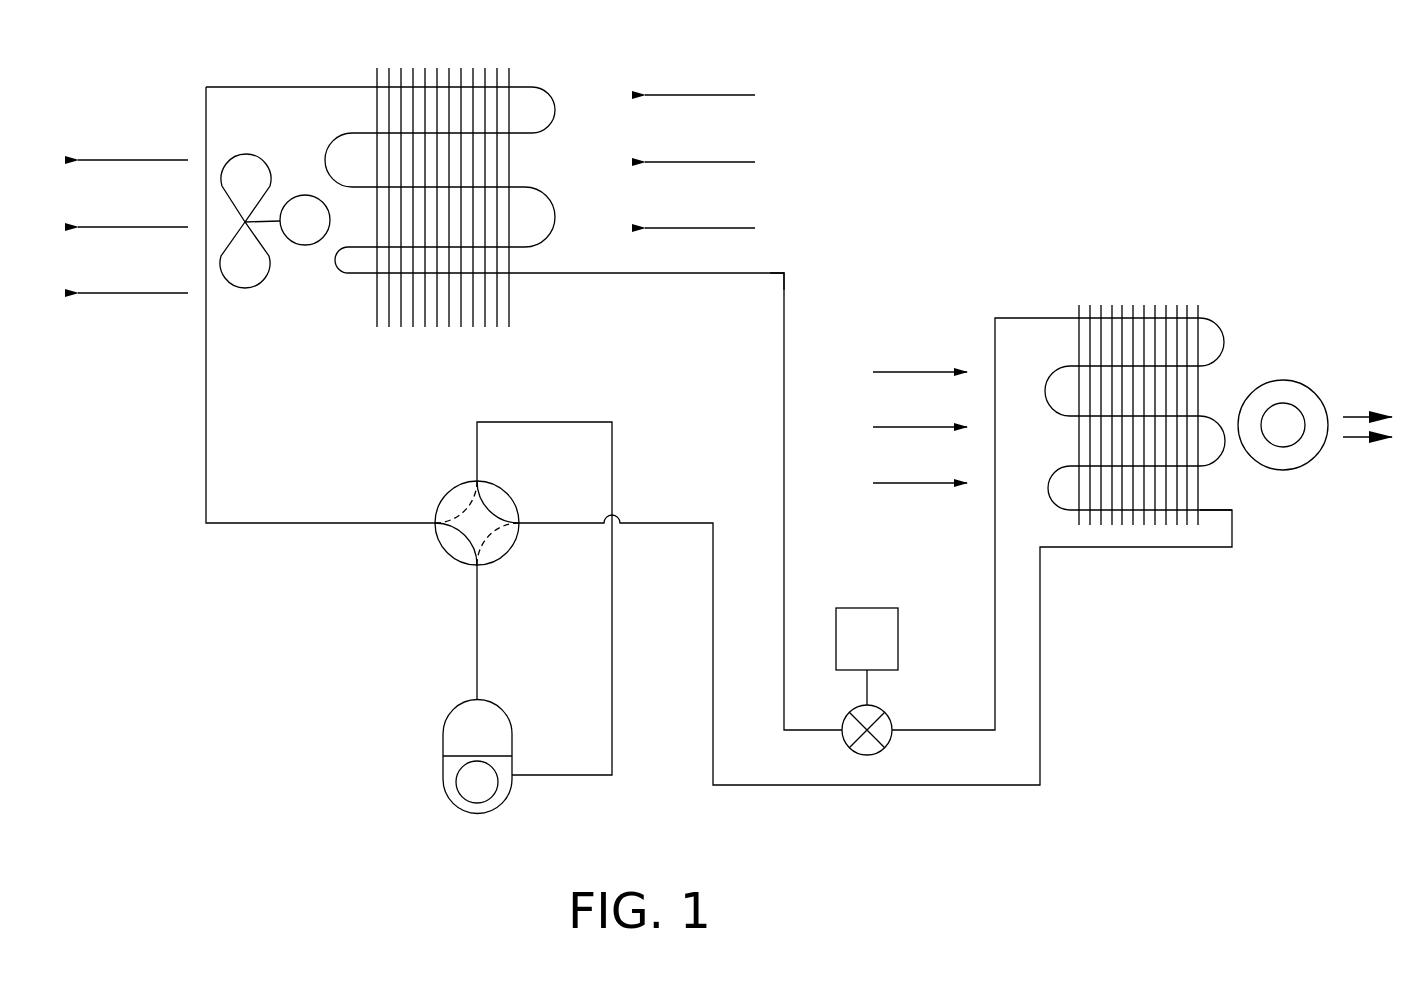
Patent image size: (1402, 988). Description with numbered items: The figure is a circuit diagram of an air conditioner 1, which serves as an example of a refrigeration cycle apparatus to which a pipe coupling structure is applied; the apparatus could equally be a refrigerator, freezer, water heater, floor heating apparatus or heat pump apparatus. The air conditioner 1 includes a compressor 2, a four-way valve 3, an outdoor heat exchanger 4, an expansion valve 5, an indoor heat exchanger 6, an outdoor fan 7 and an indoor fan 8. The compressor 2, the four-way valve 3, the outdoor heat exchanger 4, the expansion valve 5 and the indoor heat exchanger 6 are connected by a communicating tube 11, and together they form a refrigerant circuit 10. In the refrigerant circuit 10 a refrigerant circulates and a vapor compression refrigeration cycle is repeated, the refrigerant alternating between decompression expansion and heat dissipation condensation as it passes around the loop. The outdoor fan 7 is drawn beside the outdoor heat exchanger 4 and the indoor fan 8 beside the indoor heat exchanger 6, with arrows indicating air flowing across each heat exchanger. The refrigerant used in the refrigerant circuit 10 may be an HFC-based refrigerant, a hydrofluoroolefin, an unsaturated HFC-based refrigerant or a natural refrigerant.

The air conditioner 1 is at (1020, 149).
The compressor 2 is at (443, 738).
The four-way valve 3 is at (440, 497).
The outdoor heat exchanger 4 is at (557, 103).
The expansion valve 5 is at (891, 719).
The indoor heat exchanger 6 is at (1220, 326).
The outdoor fan 7 is at (260, 264).
The indoor fan 8 is at (1299, 455).
The refrigerant circuit 10 is at (789, 268).
The communicating tube 11 is at (675, 275).